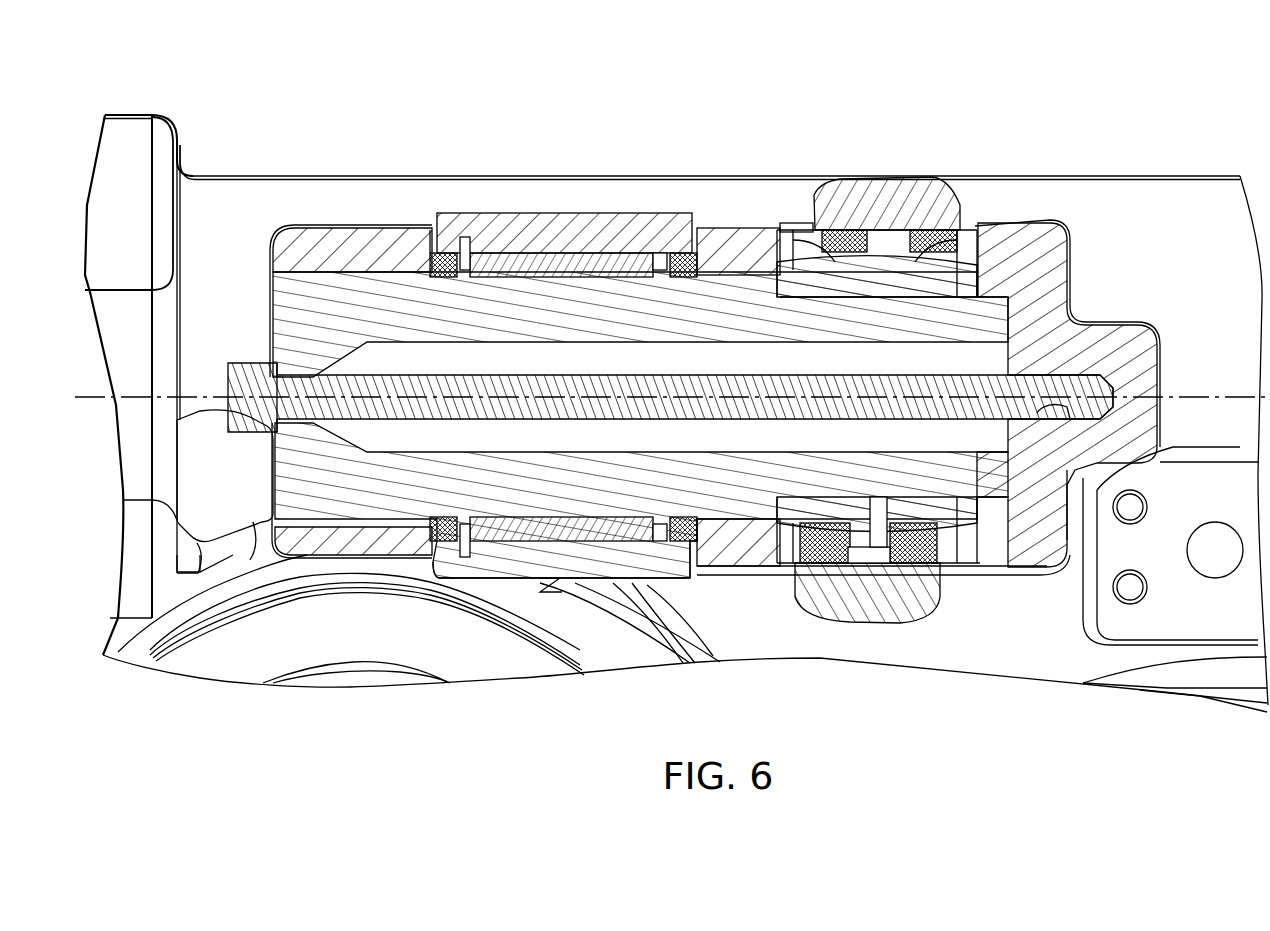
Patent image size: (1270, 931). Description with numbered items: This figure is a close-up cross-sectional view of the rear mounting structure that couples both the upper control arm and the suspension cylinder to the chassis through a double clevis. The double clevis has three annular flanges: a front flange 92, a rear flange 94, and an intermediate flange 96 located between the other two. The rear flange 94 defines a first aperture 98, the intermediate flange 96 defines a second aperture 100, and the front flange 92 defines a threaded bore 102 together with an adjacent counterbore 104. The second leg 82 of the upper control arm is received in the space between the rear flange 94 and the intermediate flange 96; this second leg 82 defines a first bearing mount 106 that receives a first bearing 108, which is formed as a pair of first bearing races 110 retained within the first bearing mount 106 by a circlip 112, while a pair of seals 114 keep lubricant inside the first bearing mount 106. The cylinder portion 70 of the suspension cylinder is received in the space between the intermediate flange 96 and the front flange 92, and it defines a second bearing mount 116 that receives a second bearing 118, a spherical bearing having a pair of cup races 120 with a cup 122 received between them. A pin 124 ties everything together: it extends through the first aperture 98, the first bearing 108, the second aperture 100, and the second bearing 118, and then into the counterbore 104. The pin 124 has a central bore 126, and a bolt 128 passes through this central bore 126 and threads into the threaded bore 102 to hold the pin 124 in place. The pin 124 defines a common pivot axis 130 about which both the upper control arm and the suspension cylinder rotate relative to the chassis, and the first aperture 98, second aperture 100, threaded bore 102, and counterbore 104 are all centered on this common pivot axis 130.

The cylinder portion 70 is at (930, 175).
The second leg 82 is at (557, 213).
The front flange 92 is at (998, 226).
The rear flange 94 is at (347, 228).
The intermediate flange 96 is at (731, 228).
The first aperture 98 is at (353, 268).
The second aperture 100 is at (727, 283).
The threaded bore 102 is at (1067, 421).
The counterbore 104 is at (978, 486).
The first bearing mount 106 is at (512, 254).
The first bearing 108 is at (528, 543).
The first bearing races 110 is at (609, 541).
The circlip 112 is at (460, 252).
The seals 114 is at (440, 547).
The second bearing mount 116 is at (887, 412).
The second bearing 118 is at (870, 567).
The cup races 120 is at (815, 567).
The cup 122 is at (838, 510).
The pin 124 is at (263, 467).
The central bore 126 is at (513, 437).
The bolt 128 is at (230, 410).
The common pivot axis 130 is at (1229, 390).